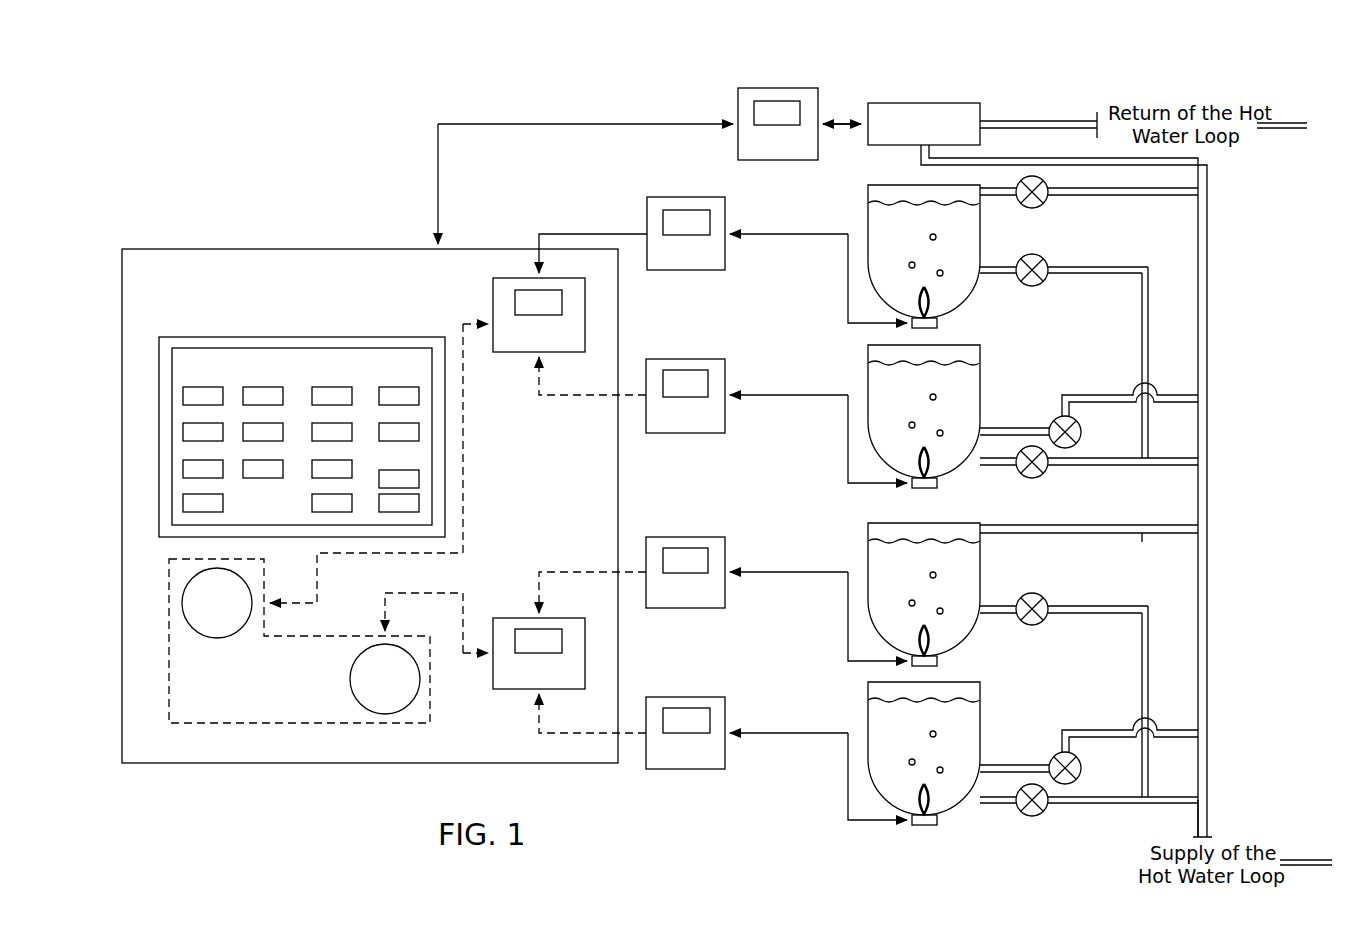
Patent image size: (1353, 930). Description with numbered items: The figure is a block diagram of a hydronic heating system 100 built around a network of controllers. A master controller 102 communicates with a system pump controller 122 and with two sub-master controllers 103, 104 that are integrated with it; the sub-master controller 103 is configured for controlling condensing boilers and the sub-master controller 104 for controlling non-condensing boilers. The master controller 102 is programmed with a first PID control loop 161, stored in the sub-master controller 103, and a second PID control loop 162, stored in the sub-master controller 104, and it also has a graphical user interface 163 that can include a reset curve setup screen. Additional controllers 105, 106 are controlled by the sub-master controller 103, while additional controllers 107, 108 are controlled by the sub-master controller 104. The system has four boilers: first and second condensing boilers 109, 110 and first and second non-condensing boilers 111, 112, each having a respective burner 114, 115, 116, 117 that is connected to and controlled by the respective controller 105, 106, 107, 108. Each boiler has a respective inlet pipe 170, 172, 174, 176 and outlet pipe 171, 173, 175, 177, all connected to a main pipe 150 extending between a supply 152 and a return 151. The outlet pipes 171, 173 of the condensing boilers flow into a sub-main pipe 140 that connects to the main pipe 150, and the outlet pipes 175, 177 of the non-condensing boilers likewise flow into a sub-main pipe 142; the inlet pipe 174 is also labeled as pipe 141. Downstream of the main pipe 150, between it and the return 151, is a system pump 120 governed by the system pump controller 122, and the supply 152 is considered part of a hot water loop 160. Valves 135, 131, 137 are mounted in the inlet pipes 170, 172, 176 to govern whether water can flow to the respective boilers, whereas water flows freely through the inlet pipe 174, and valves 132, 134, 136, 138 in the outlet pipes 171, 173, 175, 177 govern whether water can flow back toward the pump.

The hydronic heating system 100 is at (157, 783).
The master controller 102 is at (322, 249).
The sub-master controller 103 is at (493, 302).
The sub-master controller 104 is at (493, 679).
The additional controller 105 is at (687, 197).
The additional controller 106 is at (687, 359).
The additional controller 107 is at (687, 537).
The additional controller 108 is at (687, 697).
The first condensing boiler 109 is at (866, 218).
The second condensing boiler 110 is at (866, 378).
The first non-condensing boiler 111 is at (866, 558).
The second non-condensing boiler 112 is at (866, 720).
The burner 114 is at (937, 322).
The burner 115 is at (937, 483).
The burner 116 is at (937, 661).
The burner 117 is at (937, 820).
The system pump 120 is at (927, 103).
The system pump controller 122 is at (778, 160).
The valve 131 is at (1082, 432).
The valve 132 is at (1044, 282).
The valve 134 is at (1044, 474).
The valve 135 is at (1044, 204).
The valve 136 is at (1044, 621).
The valve 137 is at (1082, 768).
The valve 138 is at (1044, 812).
The sub-main pipe 140 is at (1180, 458).
The inlet pipe 141 is at (1142, 533).
The sub-main pipe 142 is at (1180, 797).
The main pipe 150 is at (1207, 482).
The return 151 is at (1040, 121).
The supply 152 is at (1198, 830).
The hot water loop 160 is at (1308, 857).
The first PID control loop 161 is at (215, 638).
The second PID control loop 162 is at (350, 679).
The graphical user interface 163 is at (198, 337).
The inlet pipe 170 is at (1003, 198).
The outlet pipe 171 is at (1003, 276).
The inlet pipe 172 is at (1005, 428).
The outlet pipe 173 is at (1005, 466).
The inlet pipe 174 is at (1045, 533).
The outlet pipe 175 is at (1004, 614).
The inlet pipe 176 is at (1005, 765).
The outlet pipe 177 is at (1005, 804).